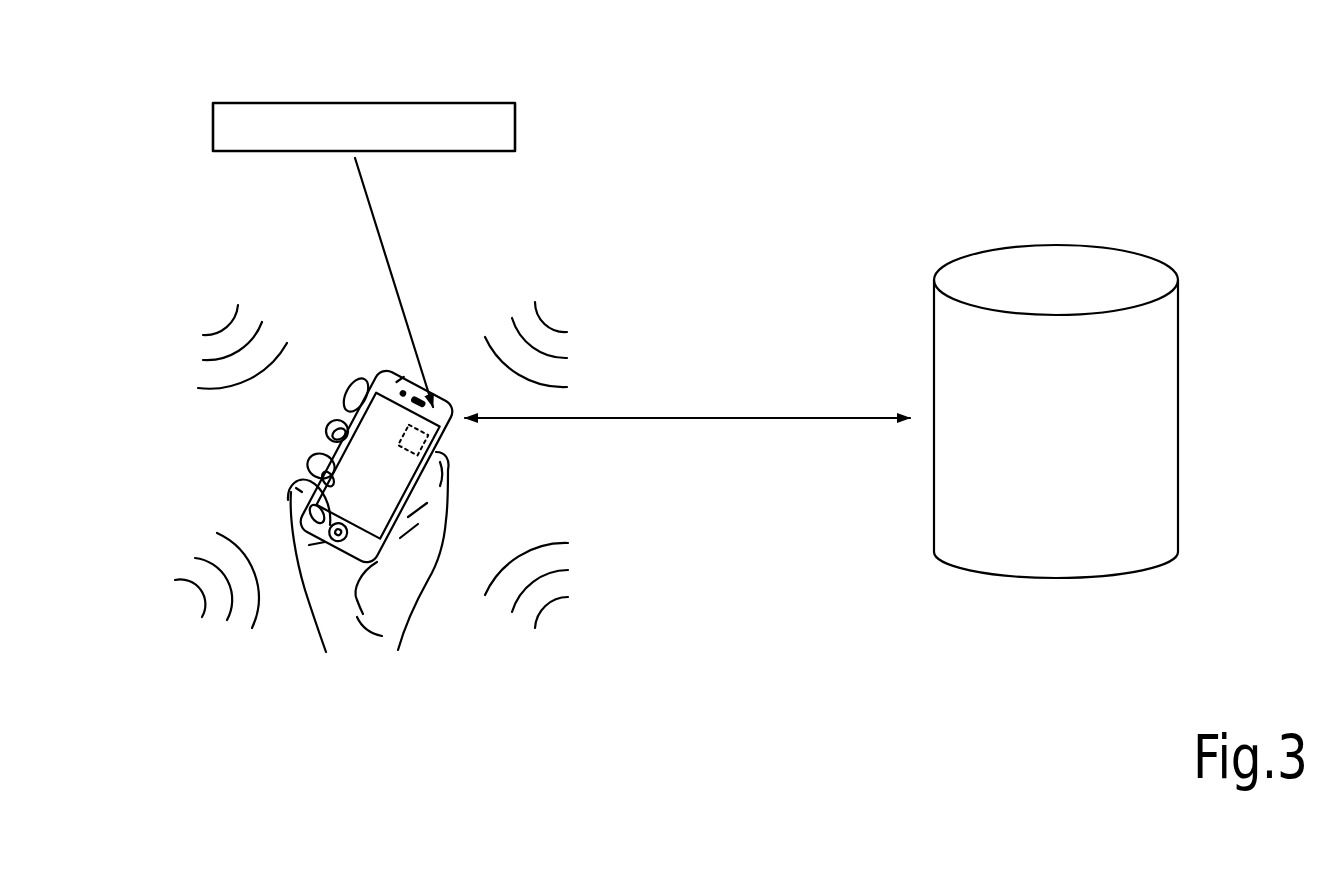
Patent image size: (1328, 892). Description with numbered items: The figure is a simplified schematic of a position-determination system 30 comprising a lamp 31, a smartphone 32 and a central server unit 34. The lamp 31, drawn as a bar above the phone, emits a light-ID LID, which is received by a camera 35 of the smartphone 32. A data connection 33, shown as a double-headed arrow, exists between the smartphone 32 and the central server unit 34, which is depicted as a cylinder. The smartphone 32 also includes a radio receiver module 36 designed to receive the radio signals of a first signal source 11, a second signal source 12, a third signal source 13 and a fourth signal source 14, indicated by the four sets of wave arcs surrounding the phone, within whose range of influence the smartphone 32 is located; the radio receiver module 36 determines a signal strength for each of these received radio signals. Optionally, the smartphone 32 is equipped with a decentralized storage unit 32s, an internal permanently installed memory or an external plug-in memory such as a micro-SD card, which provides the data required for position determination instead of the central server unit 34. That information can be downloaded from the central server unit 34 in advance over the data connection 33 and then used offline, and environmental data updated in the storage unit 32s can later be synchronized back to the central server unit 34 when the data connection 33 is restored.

The system 30 is at (187, 200).
The lamp 31 is at (500, 128).
The light-ID LID is at (386, 248).
The first signal source 11 is at (175, 321).
The second signal source 12 is at (583, 296).
The third signal source 13 is at (602, 636).
The fourth signal source 14 is at (175, 608).
The smartphone 32 is at (423, 392).
The decentralized storage unit 32s is at (413, 440).
The camera 35 is at (412, 398).
The radio receiver module 36 is at (400, 379).
The data connection 33 is at (695, 426).
The central server unit 34 is at (1143, 331).